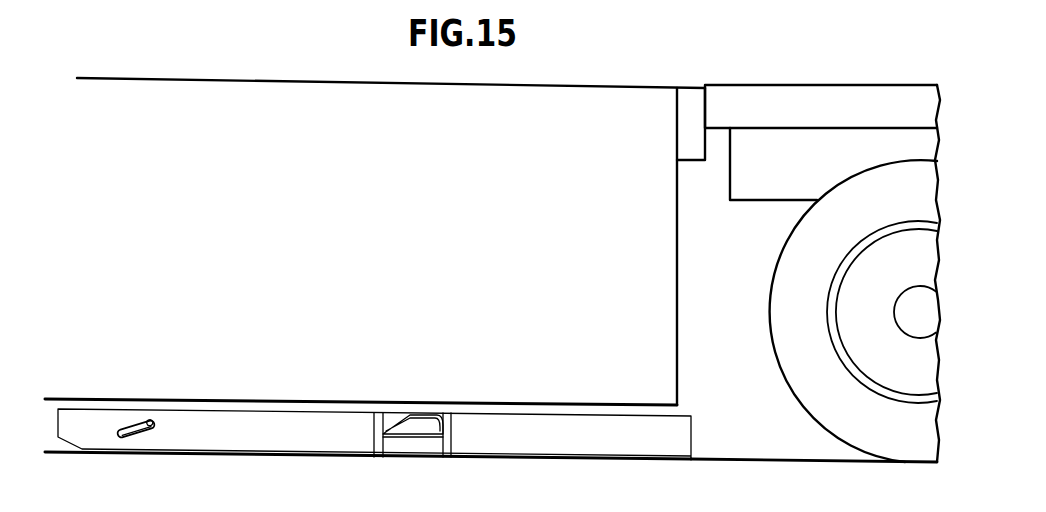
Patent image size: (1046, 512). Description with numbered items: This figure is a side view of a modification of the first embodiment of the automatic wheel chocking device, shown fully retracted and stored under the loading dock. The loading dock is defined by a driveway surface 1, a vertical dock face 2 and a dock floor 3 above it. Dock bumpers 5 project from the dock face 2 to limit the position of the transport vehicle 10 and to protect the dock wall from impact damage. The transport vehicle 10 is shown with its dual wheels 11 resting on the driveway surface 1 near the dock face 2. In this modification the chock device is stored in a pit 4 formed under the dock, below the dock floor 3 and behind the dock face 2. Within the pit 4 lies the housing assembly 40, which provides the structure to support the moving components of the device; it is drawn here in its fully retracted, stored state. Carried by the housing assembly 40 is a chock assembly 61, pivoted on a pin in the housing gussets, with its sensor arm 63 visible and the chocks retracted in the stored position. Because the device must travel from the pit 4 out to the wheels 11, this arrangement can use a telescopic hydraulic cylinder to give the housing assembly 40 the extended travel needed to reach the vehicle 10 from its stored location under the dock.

The driveway surface 1 is at (755, 460).
The dock face 2 is at (677, 318).
The dock floor 3 is at (578, 84).
The pit 4 is at (522, 403).
The dock bumper 5 is at (703, 164).
The transport vehicle 10 is at (810, 85).
The dual wheels 11 is at (782, 245).
The housing assembly 40 is at (692, 440).
The chock assembly 61 is at (425, 410).
The sensor arm 63 is at (132, 423).